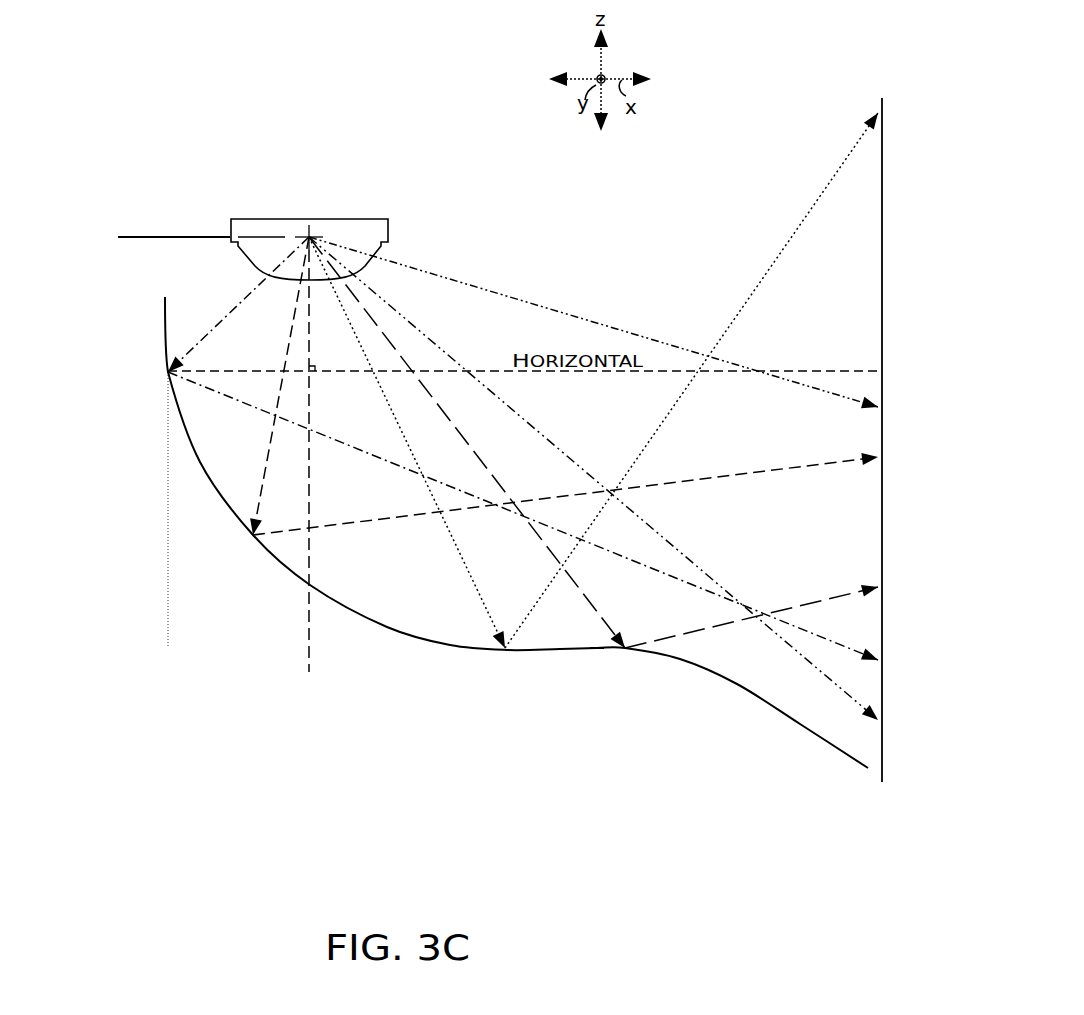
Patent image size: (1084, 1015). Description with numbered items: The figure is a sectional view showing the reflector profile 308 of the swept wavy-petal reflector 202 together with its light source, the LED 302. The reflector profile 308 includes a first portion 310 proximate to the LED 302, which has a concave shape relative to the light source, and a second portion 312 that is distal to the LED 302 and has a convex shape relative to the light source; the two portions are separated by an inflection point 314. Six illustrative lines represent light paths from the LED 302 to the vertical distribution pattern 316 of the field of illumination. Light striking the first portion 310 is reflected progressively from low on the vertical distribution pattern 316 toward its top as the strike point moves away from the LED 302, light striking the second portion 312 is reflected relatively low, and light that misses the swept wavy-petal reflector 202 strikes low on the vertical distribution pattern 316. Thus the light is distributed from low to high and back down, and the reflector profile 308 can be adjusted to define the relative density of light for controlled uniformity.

The swept wavy-petal reflector 202 is at (455, 585).
The LED 302 is at (338, 219).
The reflector profile 308 is at (516, 585).
The first portion 310 is at (387, 627).
The second portion 312 is at (738, 684).
The inflection point 314 is at (587, 648).
The vertical distribution pattern 316 is at (882, 308).